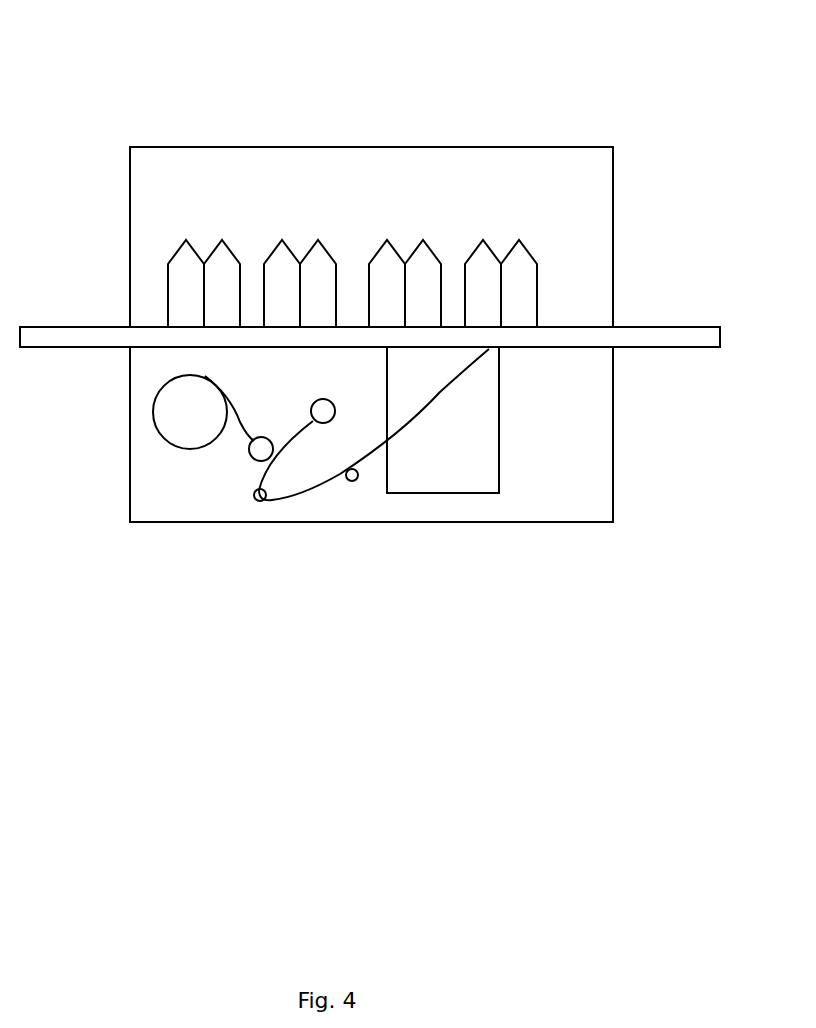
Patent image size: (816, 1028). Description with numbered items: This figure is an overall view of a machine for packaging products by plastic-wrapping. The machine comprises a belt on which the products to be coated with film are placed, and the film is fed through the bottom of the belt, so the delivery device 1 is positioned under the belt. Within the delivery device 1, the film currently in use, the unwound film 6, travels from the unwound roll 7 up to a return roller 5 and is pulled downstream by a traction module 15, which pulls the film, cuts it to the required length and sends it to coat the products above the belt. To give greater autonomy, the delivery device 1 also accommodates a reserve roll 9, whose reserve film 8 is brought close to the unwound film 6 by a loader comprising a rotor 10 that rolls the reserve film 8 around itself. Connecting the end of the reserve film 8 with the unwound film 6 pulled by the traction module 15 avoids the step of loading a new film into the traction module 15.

The delivery device 1 is at (218, 482).
The return roller 5 is at (262, 502).
The unwound film 6 is at (315, 490).
The unwound roll 7 is at (326, 397).
The reserve film 8 is at (235, 399).
The reserve roll 9 is at (152, 425).
The rotor 10 is at (253, 462).
The traction module 15 is at (456, 462).